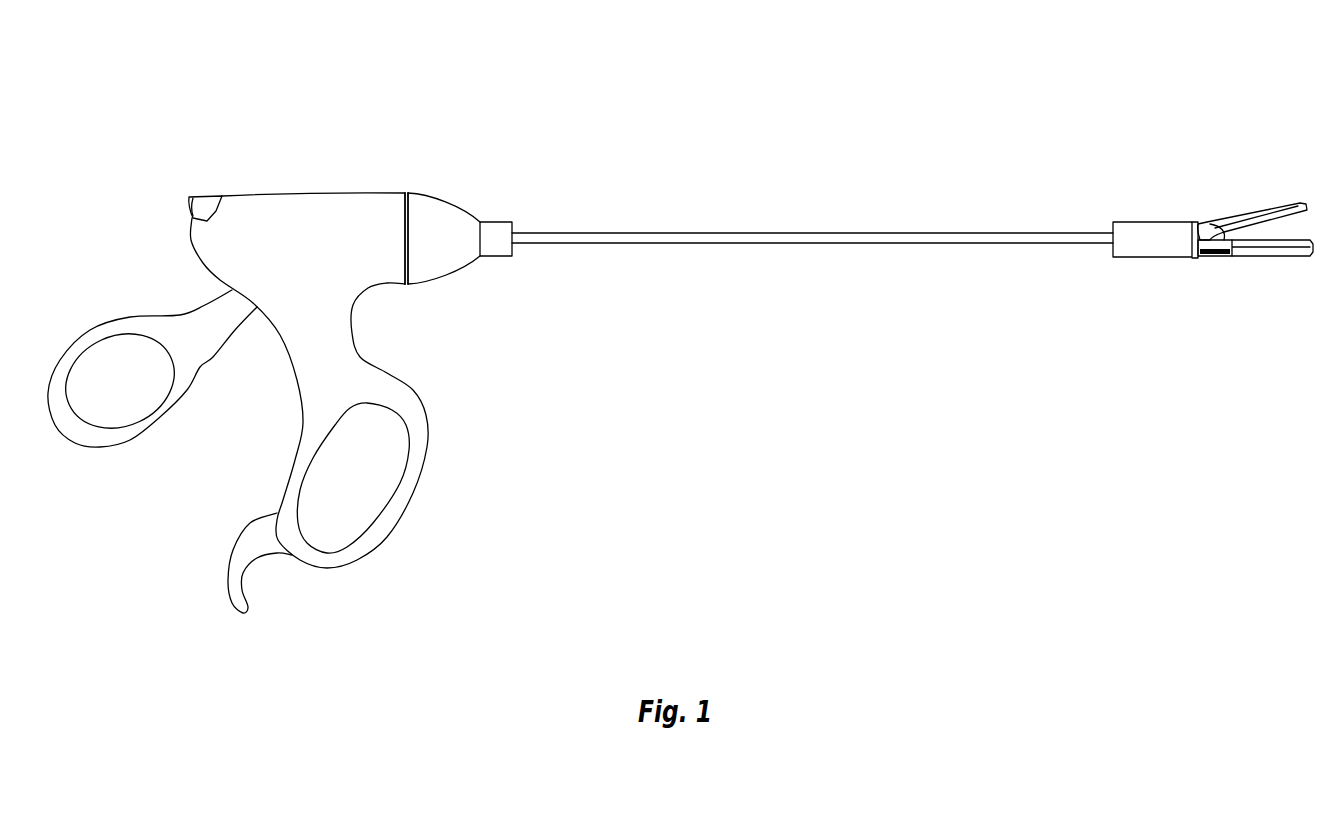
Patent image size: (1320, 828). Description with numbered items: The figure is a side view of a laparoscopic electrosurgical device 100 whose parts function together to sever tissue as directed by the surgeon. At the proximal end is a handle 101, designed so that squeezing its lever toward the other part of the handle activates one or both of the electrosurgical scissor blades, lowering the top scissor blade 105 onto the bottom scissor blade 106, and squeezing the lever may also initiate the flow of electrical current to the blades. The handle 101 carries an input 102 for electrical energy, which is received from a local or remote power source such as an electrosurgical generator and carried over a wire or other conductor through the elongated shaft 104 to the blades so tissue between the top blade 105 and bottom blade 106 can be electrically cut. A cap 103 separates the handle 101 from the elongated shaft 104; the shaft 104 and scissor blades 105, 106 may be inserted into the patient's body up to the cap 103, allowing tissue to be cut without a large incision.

The laparoscopic electrosurgical device 100 is at (574, 122).
The handle 101 is at (414, 398).
The input for electrical energy 102 is at (200, 200).
The cap 103 is at (447, 205).
The elongated shaft 104 is at (811, 235).
The top scissor blade 105 is at (1207, 216).
The bottom scissor blade 106 is at (1240, 258).